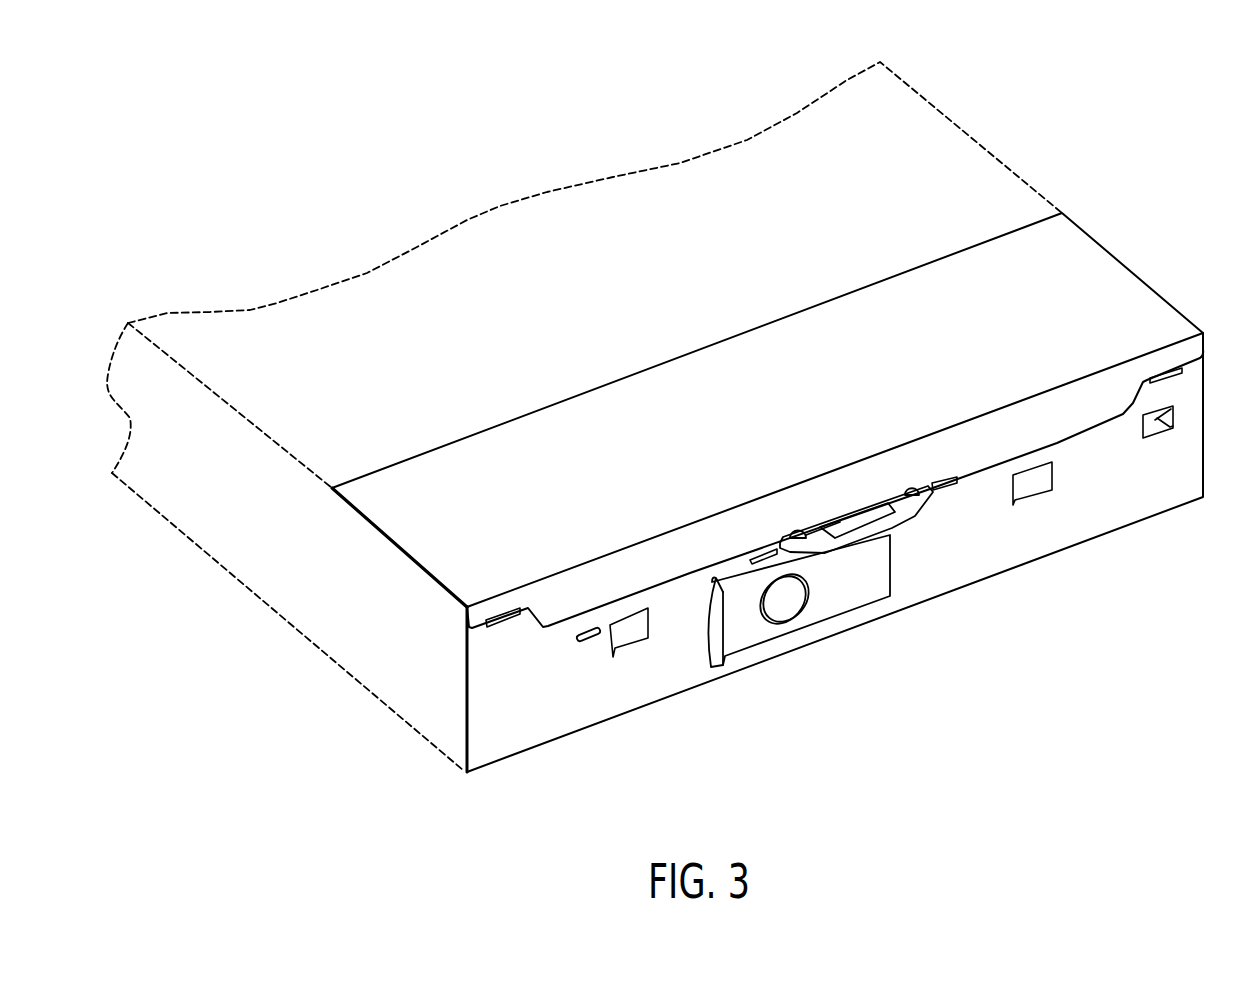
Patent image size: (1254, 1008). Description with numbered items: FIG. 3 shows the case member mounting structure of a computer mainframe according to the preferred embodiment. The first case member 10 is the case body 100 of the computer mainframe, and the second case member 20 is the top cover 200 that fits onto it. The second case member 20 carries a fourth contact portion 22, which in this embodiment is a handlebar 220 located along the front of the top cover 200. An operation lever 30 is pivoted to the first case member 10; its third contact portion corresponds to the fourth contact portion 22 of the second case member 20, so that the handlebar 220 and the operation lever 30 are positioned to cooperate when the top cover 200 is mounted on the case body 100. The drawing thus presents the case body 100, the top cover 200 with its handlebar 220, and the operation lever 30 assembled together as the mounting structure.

The first case member 10 is at (835, 565).
The case body 100 is at (568, 695).
The second case member 20 is at (778, 416).
The top cover 200 is at (1118, 273).
The fourth contact portion 22 is at (901, 570).
The handlebar 220 is at (910, 513).
The operation lever 30 is at (748, 633).